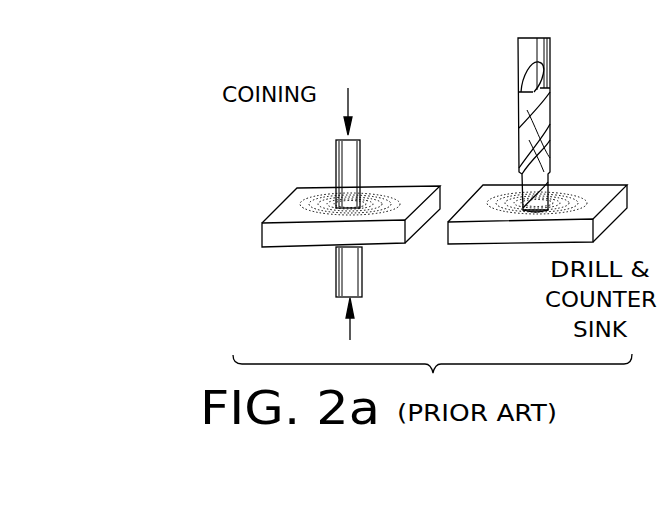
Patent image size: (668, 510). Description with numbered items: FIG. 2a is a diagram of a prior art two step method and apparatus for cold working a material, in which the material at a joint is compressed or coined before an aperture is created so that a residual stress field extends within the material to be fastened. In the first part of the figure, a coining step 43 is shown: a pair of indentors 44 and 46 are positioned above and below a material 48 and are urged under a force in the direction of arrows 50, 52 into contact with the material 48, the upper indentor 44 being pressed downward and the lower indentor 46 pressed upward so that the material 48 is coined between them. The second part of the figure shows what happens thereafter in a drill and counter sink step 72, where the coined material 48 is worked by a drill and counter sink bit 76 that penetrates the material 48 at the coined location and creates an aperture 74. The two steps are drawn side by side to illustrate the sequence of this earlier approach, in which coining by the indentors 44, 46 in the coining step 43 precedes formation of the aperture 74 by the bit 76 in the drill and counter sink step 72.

The coining step 43 is at (297, 258).
The indentor 44 is at (363, 165).
The indentor 46 is at (363, 280).
The material 48 is at (310, 187).
The arrow 50 is at (352, 104).
The arrow 52 is at (352, 337).
The drill and counter sink step 72 is at (528, 255).
The aperture 74 is at (550, 208).
The drill and counter sink bit 76 is at (553, 80).